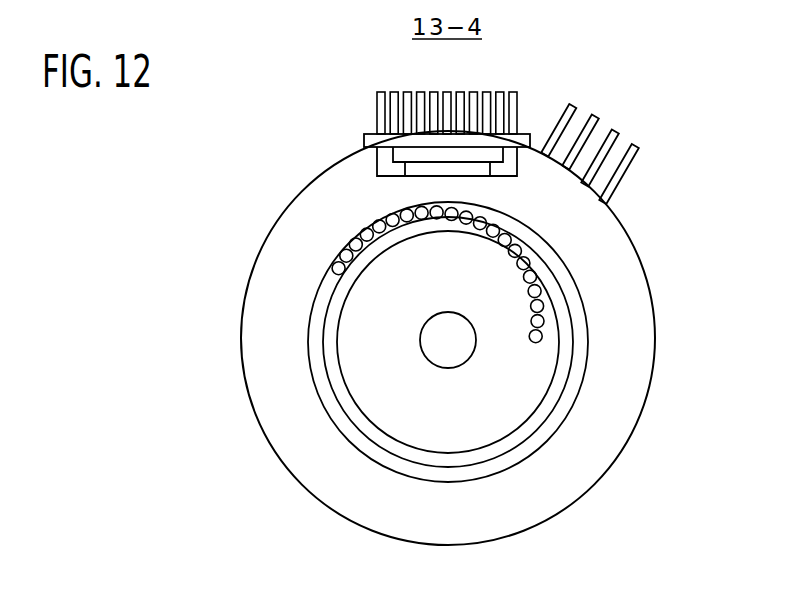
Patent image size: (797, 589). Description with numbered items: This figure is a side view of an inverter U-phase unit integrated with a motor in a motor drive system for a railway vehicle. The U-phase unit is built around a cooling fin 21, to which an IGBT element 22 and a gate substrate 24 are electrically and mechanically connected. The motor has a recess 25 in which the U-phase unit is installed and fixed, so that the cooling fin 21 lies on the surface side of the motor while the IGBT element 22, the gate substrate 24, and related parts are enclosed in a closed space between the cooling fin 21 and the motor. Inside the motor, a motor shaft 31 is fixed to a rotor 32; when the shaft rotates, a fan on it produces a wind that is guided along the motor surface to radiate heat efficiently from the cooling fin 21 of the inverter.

The cooling fin 21 is at (410, 92).
The IGBT element 22 is at (403, 153).
The gate substrate 24 is at (374, 134).
The recess 25 is at (356, 158).
The motor shaft 31 is at (430, 333).
The rotor 32 is at (385, 358).